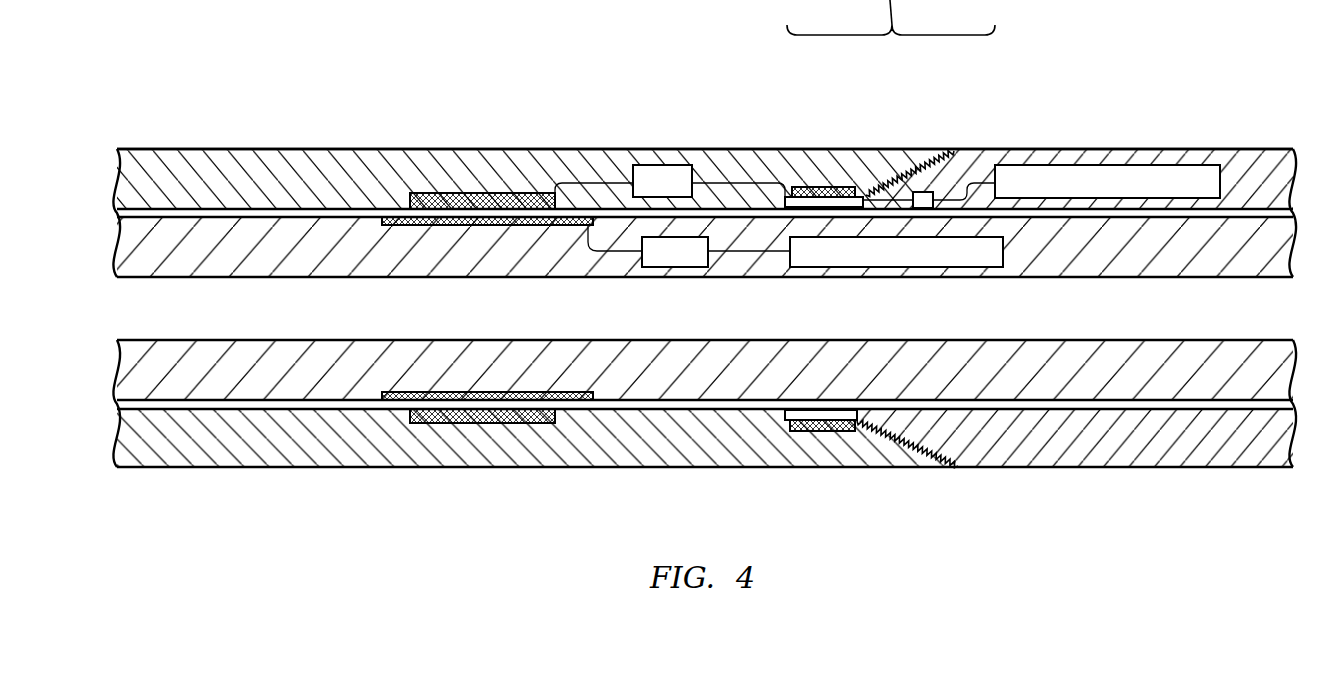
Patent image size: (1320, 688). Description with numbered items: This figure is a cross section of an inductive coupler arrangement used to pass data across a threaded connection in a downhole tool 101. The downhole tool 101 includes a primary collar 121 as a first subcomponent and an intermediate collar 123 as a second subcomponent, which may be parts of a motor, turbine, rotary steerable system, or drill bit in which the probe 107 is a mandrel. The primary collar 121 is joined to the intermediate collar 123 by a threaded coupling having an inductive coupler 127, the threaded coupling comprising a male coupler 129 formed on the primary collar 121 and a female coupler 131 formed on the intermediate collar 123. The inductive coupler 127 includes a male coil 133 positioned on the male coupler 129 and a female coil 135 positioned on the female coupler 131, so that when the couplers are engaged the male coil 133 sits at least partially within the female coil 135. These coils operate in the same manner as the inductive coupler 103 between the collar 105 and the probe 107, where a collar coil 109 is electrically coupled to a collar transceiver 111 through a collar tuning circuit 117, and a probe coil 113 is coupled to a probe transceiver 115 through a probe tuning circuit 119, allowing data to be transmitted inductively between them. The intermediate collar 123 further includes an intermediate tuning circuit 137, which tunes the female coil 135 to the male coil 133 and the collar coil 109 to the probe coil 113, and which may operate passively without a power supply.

The downhole tool 101 is at (358, 124).
The inductive coupler 103 is at (346, 229).
The collar 105 is at (548, 148).
The probe 107 is at (1045, 198).
The collar coil 109 is at (428, 192).
The collar transceiver 111 is at (1107, 165).
The probe coil 113 is at (405, 227).
The probe transceiver 115 is at (858, 268).
The collar tuning circuit 117 is at (937, 155).
The probe tuning circuit 119 is at (657, 268).
The primary collar 121 is at (1185, 148).
The intermediate collar 123 is at (785, 197).
The inductive coupler 127 is at (774, 184).
The male coupler 129 is at (880, 402).
The female coupler 131 is at (870, 468).
The male coil 133 is at (863, 207).
The female coil 135 is at (815, 187).
The intermediate tuning circuit 137 is at (662, 165).